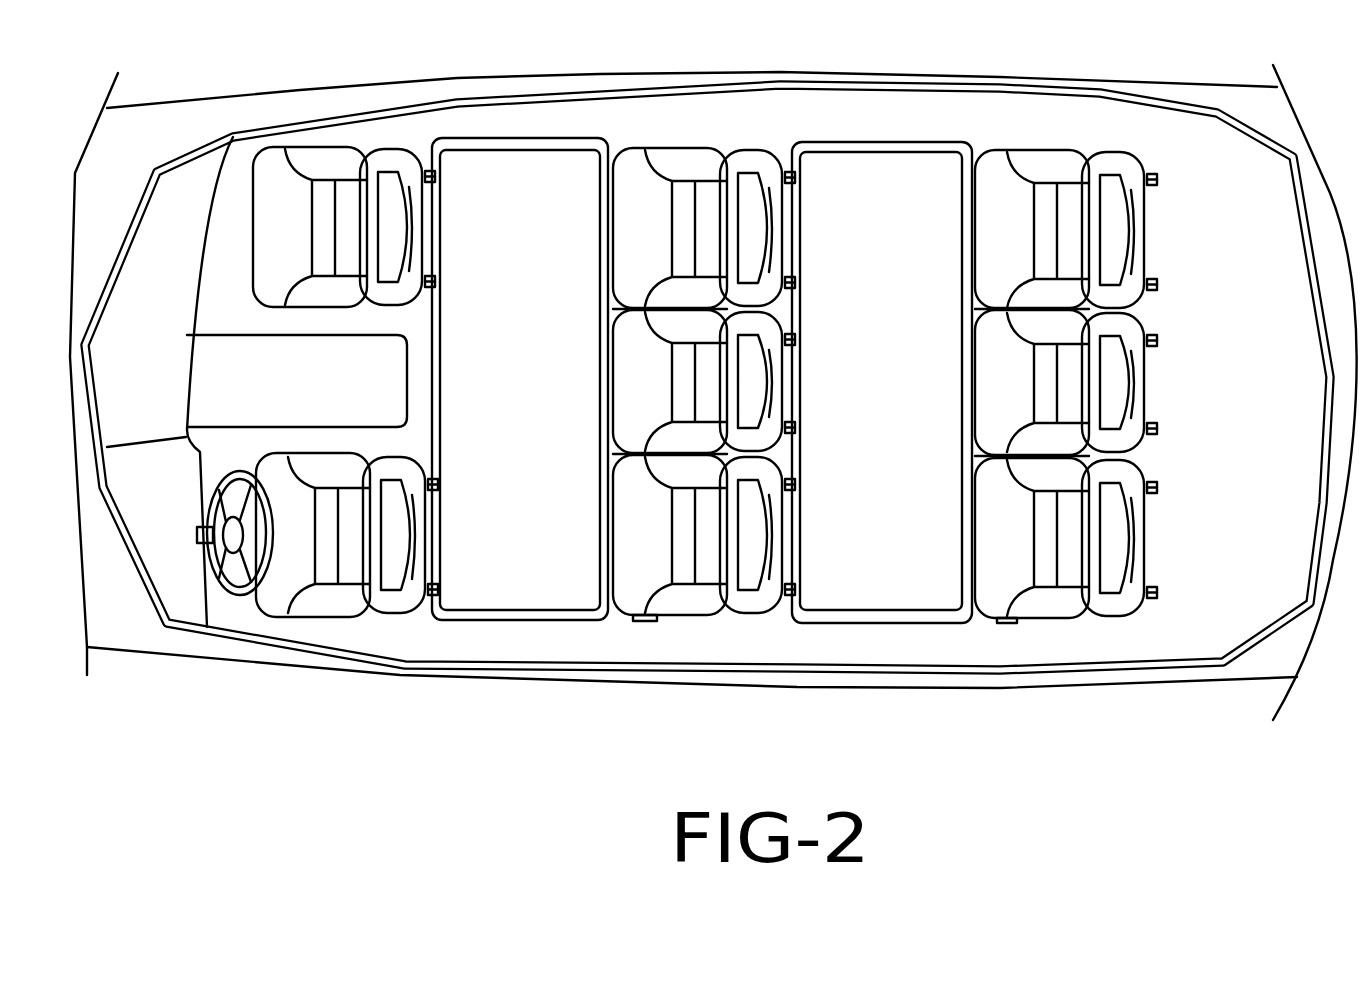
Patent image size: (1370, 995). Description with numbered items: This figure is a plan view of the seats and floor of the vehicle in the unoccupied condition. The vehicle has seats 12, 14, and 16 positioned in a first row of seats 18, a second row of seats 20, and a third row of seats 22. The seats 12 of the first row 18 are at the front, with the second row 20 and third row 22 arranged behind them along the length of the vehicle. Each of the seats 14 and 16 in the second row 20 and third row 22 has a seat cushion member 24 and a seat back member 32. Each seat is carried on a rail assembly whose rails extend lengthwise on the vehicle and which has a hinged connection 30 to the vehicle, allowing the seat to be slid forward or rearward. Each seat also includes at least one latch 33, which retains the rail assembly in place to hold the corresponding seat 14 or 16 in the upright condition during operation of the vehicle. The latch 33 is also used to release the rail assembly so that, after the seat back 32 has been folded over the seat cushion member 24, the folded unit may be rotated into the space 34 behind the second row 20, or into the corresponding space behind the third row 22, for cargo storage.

The seat 12 is at (337, 163).
The seat 14 is at (627, 237).
The seat 16 is at (1133, 230).
The first row of seats 18 is at (283, 389).
The second row of seats 20 is at (651, 444).
The third row of seats 22 is at (1117, 445).
The seat cushion member 24 is at (628, 203).
The hinged connection 30 is at (793, 173).
The seat back member 32 is at (410, 212).
The latch 33 is at (653, 308).
The space 34 is at (868, 527).